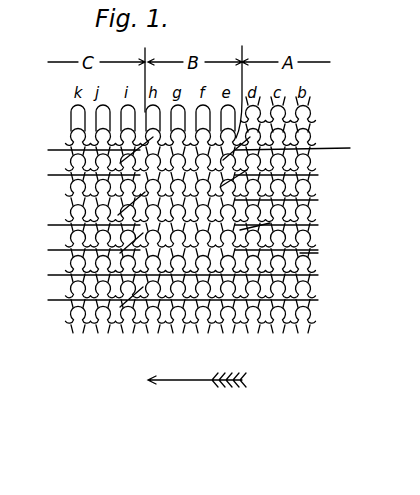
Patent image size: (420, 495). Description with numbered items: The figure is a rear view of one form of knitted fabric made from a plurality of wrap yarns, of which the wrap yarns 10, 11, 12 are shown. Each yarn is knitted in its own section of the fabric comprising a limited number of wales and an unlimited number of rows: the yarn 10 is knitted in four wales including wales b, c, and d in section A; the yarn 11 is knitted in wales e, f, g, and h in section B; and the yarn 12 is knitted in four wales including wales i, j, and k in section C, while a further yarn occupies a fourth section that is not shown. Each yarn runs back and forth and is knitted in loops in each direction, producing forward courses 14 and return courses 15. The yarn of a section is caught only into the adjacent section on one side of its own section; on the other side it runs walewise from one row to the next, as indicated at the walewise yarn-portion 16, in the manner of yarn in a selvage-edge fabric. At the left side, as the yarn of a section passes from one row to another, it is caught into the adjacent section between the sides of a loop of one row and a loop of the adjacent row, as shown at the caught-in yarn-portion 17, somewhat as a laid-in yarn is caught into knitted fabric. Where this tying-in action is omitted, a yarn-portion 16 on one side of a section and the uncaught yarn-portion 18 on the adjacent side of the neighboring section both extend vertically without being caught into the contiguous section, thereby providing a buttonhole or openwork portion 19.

The wrap yarn 10 is at (290, 333).
The wrap yarn 11 is at (190, 335).
The wrap yarn 12 is at (96, 333).
The forward course 14 is at (368, 207).
The return course 15 is at (347, 188).
The walewise yarn-portion 16 is at (368, 286).
The caught-in yarn-portion 17 is at (368, 311).
The uncaught yarn-portion 18 is at (318, 253).
The buttonhole or openwork portion 19 is at (318, 228).